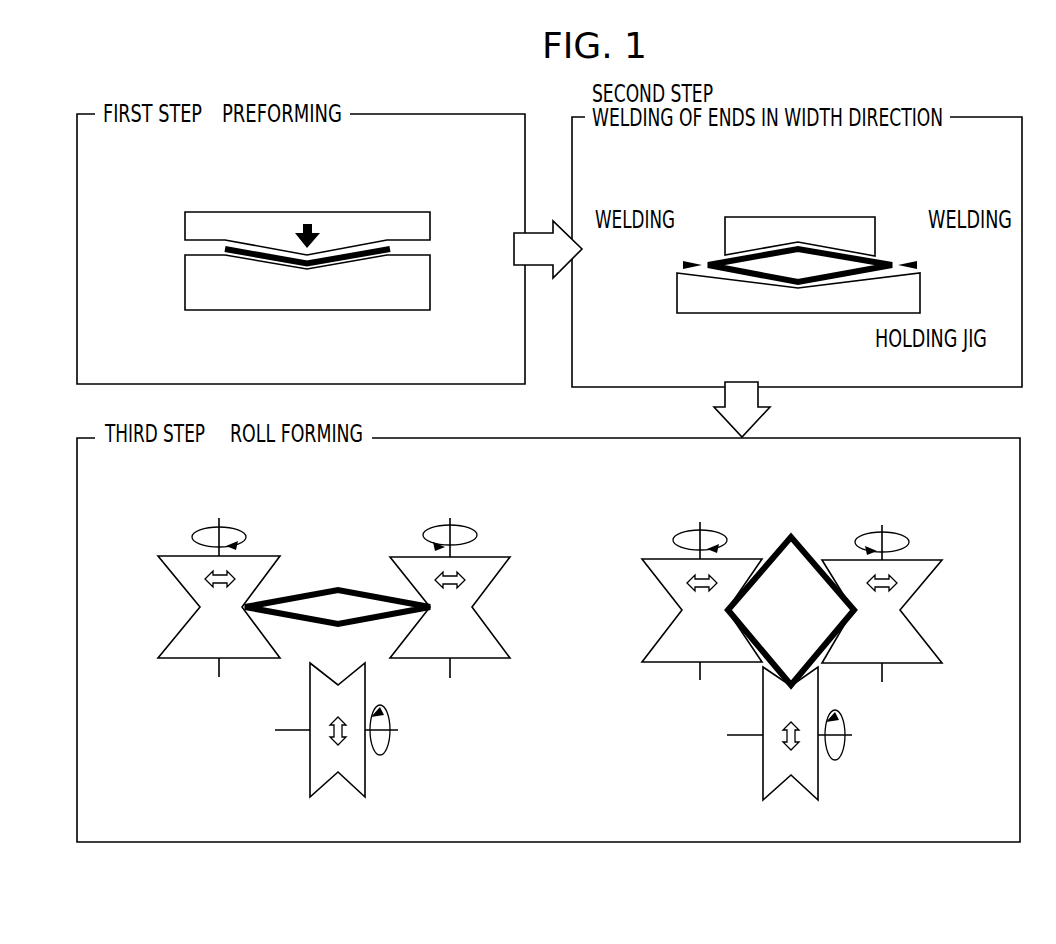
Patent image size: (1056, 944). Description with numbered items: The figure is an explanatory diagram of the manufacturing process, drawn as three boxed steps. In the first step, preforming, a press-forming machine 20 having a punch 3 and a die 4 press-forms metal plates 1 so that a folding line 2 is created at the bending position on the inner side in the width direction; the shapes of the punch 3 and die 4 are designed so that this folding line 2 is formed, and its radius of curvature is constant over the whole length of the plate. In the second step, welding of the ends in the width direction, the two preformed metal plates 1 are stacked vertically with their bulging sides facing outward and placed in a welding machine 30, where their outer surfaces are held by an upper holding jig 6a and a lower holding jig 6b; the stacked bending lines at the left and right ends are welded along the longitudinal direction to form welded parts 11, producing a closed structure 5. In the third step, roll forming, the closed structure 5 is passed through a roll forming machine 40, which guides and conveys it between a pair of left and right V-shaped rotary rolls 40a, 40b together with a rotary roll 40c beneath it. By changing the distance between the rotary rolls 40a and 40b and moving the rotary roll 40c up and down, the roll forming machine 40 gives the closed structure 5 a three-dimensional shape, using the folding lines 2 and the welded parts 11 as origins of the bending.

The metal plate 1 is at (268, 252).
The folding line 2 is at (305, 267).
The punch 3 is at (190, 226).
The die 4 is at (190, 286).
The closed structure 5 is at (755, 273).
The upper holding jig 6a is at (872, 232).
The lower holding jig 6b is at (905, 296).
The welded part 11 is at (682, 265).
The press-forming machine 20 is at (378, 196).
The welding machine 30 is at (882, 195).
The roll forming machine 40 is at (548, 659).
The left rotary roll 40a is at (178, 640).
The right rotary roll 40b is at (487, 638).
The lower rotary roll 40c is at (310, 769).